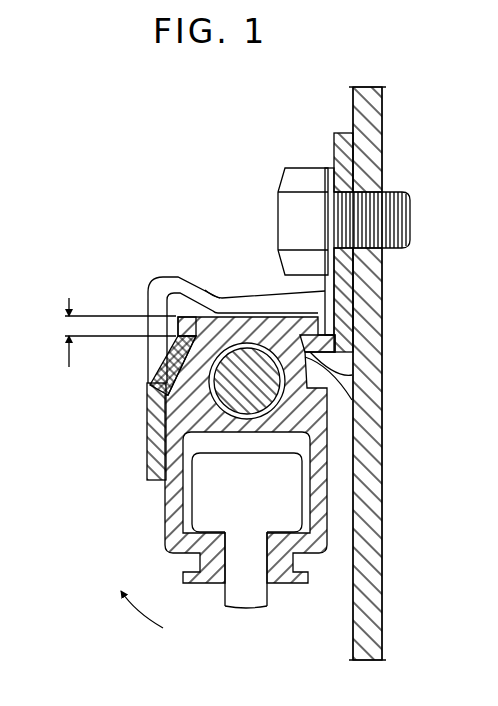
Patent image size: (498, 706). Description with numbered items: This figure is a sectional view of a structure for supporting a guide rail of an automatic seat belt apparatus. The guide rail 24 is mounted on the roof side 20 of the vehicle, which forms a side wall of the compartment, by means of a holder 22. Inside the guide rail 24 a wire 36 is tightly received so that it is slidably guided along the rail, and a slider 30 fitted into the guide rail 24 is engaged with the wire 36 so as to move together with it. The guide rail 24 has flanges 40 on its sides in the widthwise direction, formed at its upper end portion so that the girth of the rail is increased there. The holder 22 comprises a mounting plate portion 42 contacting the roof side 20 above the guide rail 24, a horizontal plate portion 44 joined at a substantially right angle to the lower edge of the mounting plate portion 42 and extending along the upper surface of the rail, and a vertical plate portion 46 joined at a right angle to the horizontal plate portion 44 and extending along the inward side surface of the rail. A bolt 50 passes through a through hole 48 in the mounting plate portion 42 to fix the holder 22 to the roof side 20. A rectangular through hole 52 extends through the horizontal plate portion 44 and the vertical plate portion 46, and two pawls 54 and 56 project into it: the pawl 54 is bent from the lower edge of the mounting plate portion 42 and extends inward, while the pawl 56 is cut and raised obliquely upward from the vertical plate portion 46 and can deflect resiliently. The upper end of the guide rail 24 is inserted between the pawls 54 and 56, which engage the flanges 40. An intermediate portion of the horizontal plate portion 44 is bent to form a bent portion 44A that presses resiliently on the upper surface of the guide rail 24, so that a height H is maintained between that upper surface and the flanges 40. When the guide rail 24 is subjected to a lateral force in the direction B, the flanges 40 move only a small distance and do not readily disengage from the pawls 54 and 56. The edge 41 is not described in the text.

The roof side 20 is at (353, 600).
The holder 22 is at (150, 250).
The guide rail 24 is at (174, 503).
The slider 30 is at (238, 602).
The wire 36 is at (272, 397).
The flange 40 is at (176, 360).
The edge 41 is at (150, 372).
The mounting plate portion 42 is at (342, 148).
The horizontal plate portion 44 is at (264, 290).
The bent portion 44A is at (216, 292).
The vertical plate portion 46 is at (147, 435).
The through hole 48 is at (383, 157).
The bolt 50 is at (296, 207).
The rectangular through hole 52 is at (338, 300).
The pawl 54 is at (330, 362).
The pawl 56 is at (150, 386).
The height H is at (68, 328).
The direction B is at (140, 624).